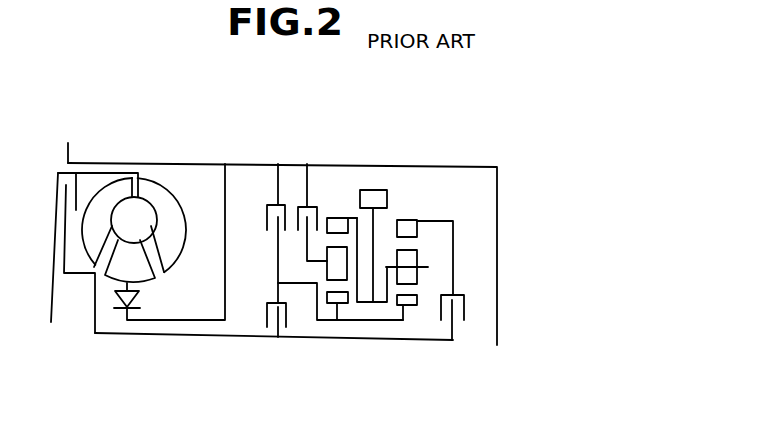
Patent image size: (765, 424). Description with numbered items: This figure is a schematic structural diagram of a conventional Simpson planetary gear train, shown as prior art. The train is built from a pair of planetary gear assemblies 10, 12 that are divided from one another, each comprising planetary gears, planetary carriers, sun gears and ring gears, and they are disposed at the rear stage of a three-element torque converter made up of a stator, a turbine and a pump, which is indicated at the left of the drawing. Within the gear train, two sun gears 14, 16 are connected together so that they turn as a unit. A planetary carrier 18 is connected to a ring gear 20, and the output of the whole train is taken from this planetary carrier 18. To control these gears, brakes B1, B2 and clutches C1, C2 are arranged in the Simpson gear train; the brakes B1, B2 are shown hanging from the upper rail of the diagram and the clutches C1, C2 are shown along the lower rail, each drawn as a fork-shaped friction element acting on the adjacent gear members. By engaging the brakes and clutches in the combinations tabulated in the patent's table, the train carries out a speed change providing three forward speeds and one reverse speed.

The planetary gear assembly 10 is at (455, 161).
The planetary gear assembly 12 is at (363, 247).
The sun gear 14 is at (417, 299).
The sun gear 16 is at (342, 303).
The planetary carrier 18 is at (387, 265).
The ring gear 20 is at (326, 220).
The brake B1 is at (274, 223).
The brake B2 is at (312, 202).
The clutch C1 is at (277, 336).
The clutch C2 is at (440, 298).